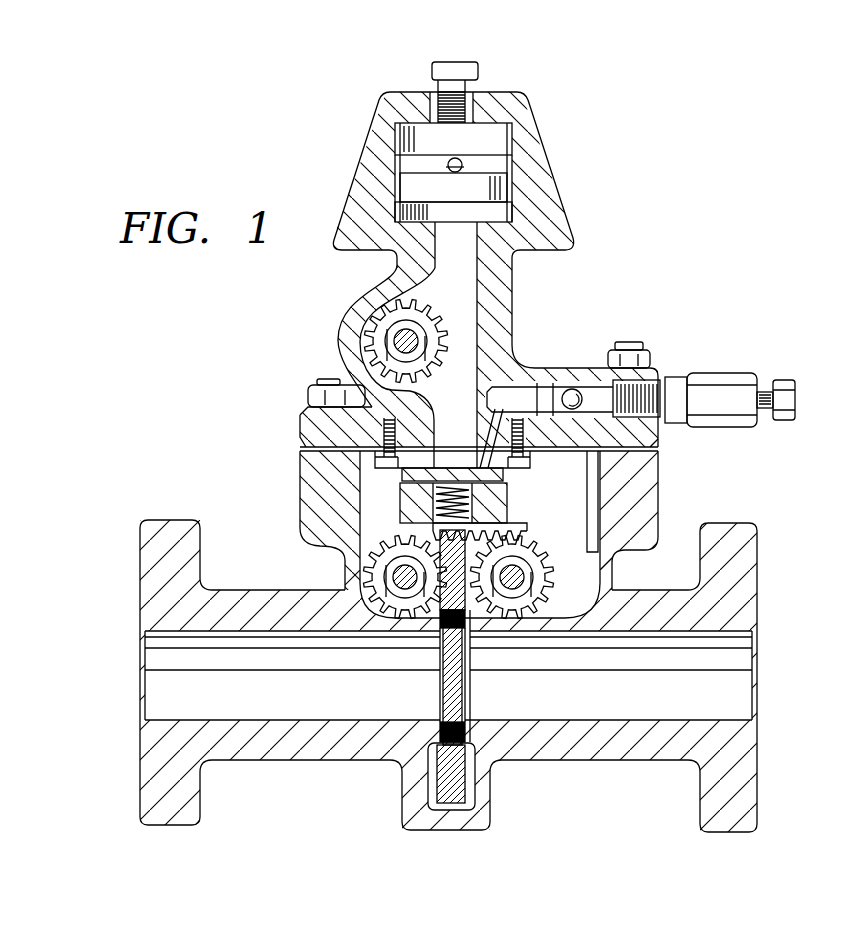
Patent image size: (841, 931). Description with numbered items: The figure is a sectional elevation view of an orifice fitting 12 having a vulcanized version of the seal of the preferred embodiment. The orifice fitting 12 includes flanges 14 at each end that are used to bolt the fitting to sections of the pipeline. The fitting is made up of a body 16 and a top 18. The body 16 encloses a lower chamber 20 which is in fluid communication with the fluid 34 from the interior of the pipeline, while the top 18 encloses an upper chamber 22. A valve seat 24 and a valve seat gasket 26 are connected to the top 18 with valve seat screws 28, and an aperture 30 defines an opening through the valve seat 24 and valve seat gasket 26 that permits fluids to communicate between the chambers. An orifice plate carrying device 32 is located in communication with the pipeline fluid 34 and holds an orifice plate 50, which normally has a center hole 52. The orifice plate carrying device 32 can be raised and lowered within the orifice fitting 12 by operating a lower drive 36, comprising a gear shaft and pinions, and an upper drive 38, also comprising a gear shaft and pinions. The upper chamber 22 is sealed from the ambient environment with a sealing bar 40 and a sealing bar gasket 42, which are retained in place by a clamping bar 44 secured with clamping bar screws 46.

The orifice fitting 12 is at (742, 594).
The flanges 14 is at (157, 552).
The body 16 is at (322, 516).
The top 18 is at (492, 322).
The lower chamber 20 is at (573, 522).
The upper chamber 22 is at (465, 284).
The valve seat 24 is at (497, 462).
The valve seat gasket 26 is at (524, 457).
The valve seat screws 28 is at (482, 434).
The aperture 30 is at (405, 468).
The orifice plate carrying device 32 is at (458, 777).
The fluid 34 is at (302, 704).
The lower drive 36 is at (363, 572).
The upper drive 38 is at (348, 316).
The sealing bar 40 is at (497, 185).
The sealing bar gasket 42 is at (497, 212).
The clamping bar 44 is at (497, 142).
The clamping bar screws 46 is at (456, 62).
The orifice plate 50 is at (448, 707).
The center hole 52 is at (458, 684).